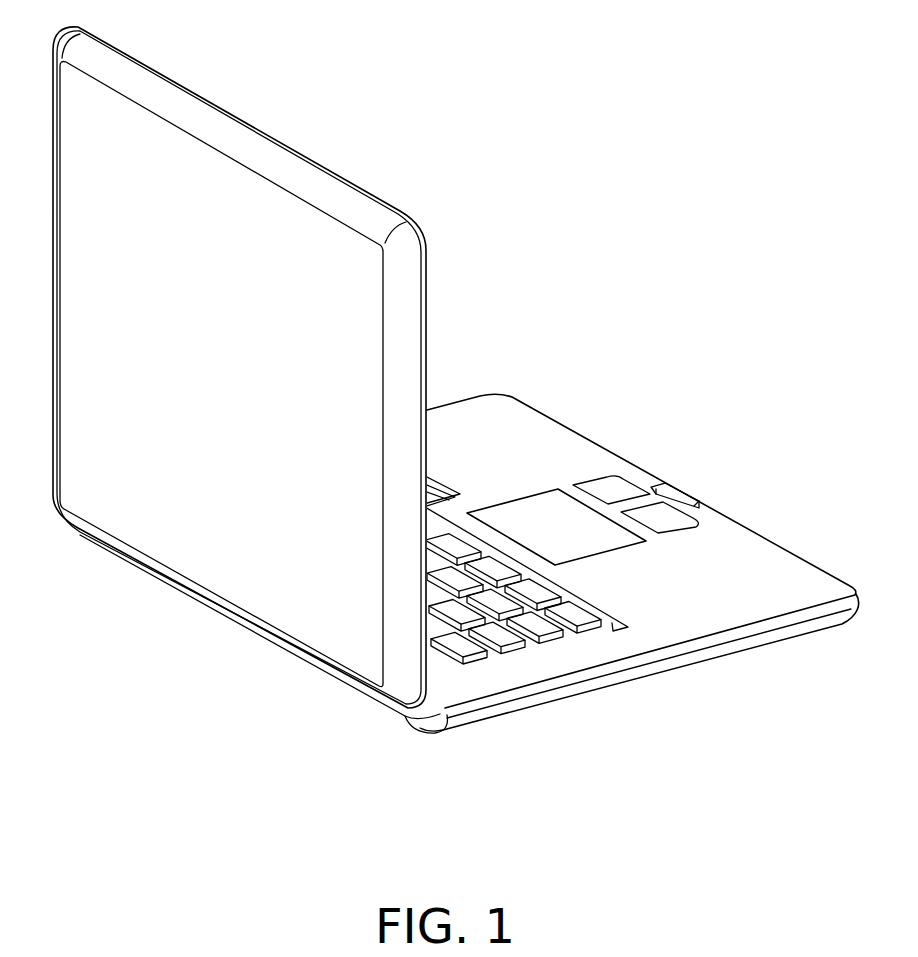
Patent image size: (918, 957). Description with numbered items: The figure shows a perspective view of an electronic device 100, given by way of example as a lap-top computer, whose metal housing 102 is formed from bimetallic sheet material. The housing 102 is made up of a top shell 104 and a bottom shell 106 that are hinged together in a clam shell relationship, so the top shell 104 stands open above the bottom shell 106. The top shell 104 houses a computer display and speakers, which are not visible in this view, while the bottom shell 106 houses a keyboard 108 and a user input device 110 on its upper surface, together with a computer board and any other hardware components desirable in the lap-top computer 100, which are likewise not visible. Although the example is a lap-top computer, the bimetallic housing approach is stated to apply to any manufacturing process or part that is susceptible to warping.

The electronic device 100 is at (689, 127).
The metal housing 102 is at (445, 726).
The top shell 104 is at (118, 518).
The bottom shell 106 is at (731, 657).
The keyboard 108 is at (580, 613).
The user input device 110 is at (545, 517).